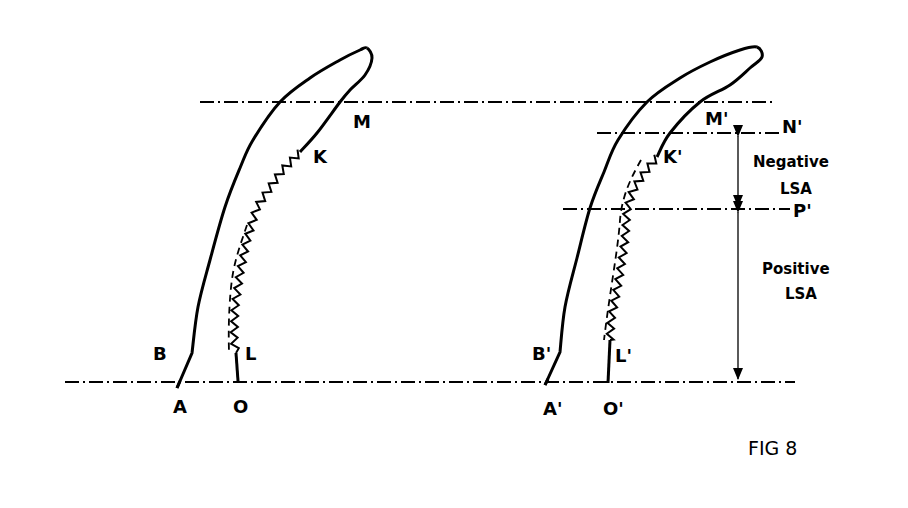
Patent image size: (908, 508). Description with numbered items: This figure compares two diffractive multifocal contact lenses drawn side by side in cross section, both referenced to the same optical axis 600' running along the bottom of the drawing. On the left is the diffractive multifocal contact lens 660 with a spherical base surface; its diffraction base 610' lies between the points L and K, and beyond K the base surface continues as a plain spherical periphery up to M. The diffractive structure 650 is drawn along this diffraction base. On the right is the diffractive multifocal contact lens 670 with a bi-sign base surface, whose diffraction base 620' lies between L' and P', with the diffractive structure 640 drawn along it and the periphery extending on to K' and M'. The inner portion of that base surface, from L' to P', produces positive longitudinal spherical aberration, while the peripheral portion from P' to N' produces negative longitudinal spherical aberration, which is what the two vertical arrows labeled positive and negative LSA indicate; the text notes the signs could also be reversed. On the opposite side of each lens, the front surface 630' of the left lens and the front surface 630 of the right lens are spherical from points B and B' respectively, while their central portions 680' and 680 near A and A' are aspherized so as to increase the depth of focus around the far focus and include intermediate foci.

The optical axis 600' is at (430, 422).
The diffraction base 610' is at (202, 249).
The diffraction base 620' is at (573, 250).
The front surface 630' is at (235, 217).
The front surface 630 is at (651, 216).
The serrated suction side surface 640 is at (625, 298).
The serrated suction side surface 650 is at (248, 290).
The diffractive multifocal contact lens with spherical base surface 660 is at (237, 203).
The diffractive multifocal contact lens with bi-sign base surface 670 is at (633, 202).
The central portion of front surface 680' is at (146, 417).
The central portion of front surface 680 is at (511, 411).